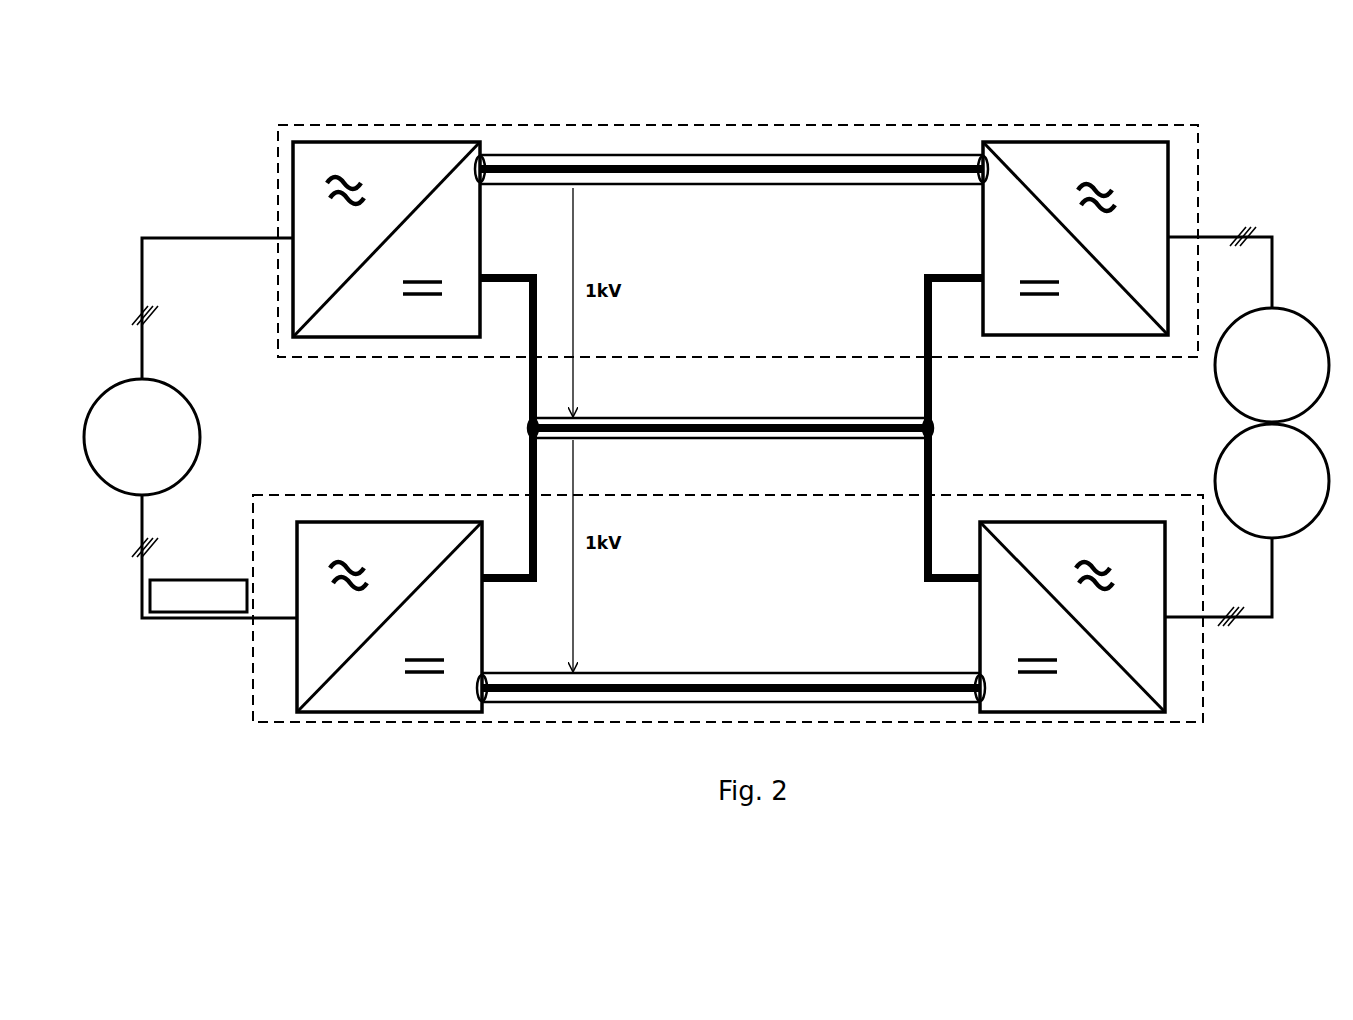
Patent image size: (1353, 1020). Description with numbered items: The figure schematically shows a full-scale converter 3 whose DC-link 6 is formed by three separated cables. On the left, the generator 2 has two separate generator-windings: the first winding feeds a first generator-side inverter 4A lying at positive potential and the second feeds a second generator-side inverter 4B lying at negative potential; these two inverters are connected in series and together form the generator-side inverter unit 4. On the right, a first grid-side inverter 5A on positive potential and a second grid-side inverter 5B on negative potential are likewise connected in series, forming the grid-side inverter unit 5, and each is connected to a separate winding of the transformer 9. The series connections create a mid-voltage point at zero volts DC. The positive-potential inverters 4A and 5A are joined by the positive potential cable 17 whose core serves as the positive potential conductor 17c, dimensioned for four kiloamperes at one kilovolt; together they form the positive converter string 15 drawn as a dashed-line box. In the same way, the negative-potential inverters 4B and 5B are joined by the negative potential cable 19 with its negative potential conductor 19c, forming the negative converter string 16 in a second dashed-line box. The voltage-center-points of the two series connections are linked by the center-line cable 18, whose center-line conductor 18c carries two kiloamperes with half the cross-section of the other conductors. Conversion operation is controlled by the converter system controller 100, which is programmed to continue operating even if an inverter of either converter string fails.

The generator 2 is at (108, 480).
The full-scale converter 3 is at (250, 98).
The generator-side inverter unit 4 is at (448, 398).
The first generator-side inverter 4A is at (293, 178).
The second generator-side inverter 4B is at (297, 678).
The grid-side inverter unit 5 is at (1000, 395).
The first grid-side inverter 5A is at (1170, 180).
The second grid-side inverter 5B is at (1168, 667).
The DC-link 6 is at (893, 718).
The transformer 9 is at (1300, 310).
The positive converter string 15 is at (1198, 128).
The negative converter string 16 is at (1205, 718).
The positive potential cable 17 is at (712, 152).
The positive potential conductor 17c is at (822, 165).
The center-line cable 18 is at (670, 416).
The center-line conductor 18c is at (720, 440).
The negative potential cable 19 is at (645, 672).
The negative potential conductor 19c is at (762, 690).
The converter system controller 100 is at (207, 580).